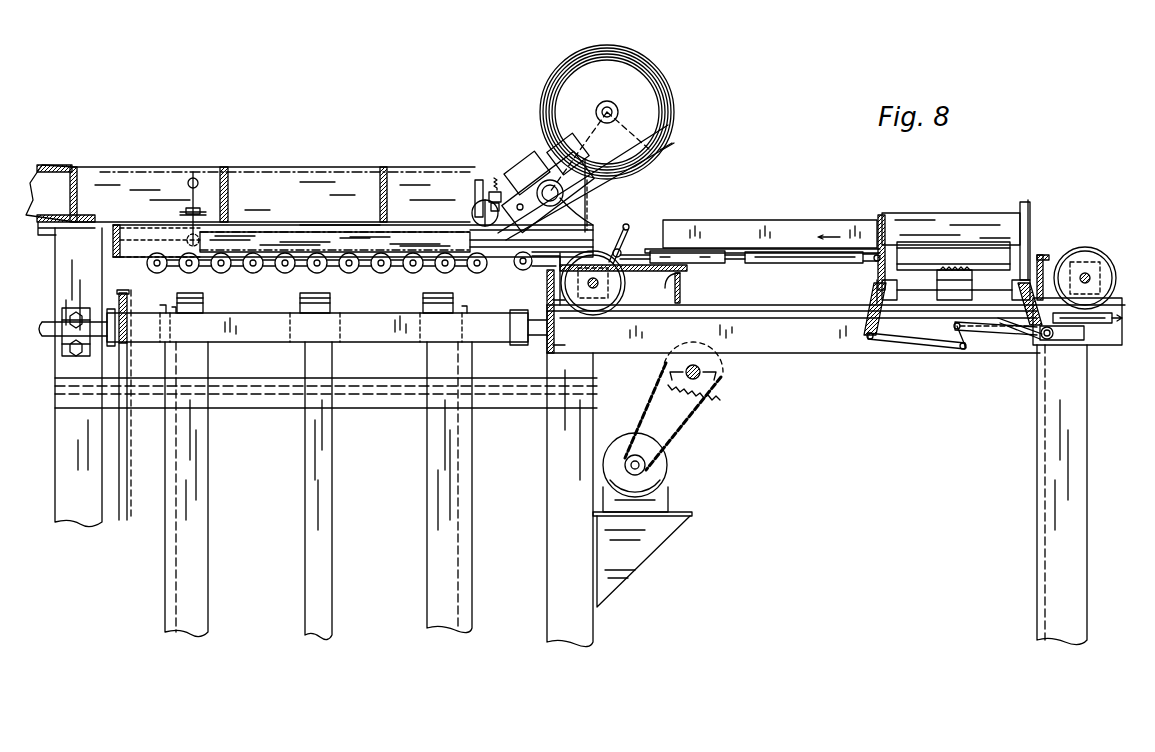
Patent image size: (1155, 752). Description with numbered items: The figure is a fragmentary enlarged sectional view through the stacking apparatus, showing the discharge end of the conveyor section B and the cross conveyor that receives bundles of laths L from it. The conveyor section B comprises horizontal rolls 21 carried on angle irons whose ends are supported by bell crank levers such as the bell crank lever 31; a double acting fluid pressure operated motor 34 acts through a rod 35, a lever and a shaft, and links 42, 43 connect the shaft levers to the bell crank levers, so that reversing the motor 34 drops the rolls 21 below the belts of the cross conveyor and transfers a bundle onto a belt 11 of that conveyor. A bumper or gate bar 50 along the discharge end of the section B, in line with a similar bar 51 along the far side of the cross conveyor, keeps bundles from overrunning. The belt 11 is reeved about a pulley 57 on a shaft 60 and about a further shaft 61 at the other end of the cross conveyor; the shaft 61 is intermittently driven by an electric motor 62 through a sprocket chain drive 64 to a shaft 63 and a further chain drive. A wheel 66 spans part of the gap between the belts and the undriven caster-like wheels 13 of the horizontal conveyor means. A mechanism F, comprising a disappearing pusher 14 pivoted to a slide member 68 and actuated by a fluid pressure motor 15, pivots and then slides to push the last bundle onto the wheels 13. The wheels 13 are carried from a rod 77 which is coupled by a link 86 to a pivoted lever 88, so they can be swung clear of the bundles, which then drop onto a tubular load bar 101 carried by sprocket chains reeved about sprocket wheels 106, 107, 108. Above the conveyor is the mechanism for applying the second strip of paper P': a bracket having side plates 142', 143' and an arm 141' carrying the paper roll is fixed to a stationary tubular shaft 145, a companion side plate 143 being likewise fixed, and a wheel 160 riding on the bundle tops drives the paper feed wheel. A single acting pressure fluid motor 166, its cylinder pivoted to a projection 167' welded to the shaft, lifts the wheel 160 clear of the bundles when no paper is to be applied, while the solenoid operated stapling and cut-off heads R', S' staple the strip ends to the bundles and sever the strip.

The link 86 is at (193, 178).
The lever 88 is at (183, 213).
The rod 77 is at (186, 240).
The strip of paper P' is at (335, 226).
The bundle of laths L is at (352, 234).
The caster-like wheels 13 is at (380, 270).
The wheel 66 is at (522, 265).
The tubular elevator or load bar 101 is at (250, 300).
The sprocket wheel 108 is at (122, 300).
The wheel 160 is at (472, 216).
The stapling head R' is at (469, 179).
The cut-off head S' is at (491, 176).
The pressure fluid motor 166 is at (555, 160).
The side plate 142' is at (548, 176).
The arm 141' is at (634, 118).
The side plate 143' is at (689, 140).
The projection 167' is at (689, 157).
The side plate 143 is at (586, 182).
The stationary tubular shaft 145 is at (590, 205).
The disappearing pusher 14 is at (624, 238).
The belt 11 is at (745, 250).
The fluid pressure motor 15 is at (782, 263).
The bar 51 is at (798, 222).
The mechanism F is at (665, 249).
The conveyor section B is at (860, 283).
The shaft 61 is at (600, 284).
The slide member 68 is at (682, 279).
The bumper or gate bar 50 is at (978, 213).
The horizontal rolls 21 is at (915, 248).
The bell crank lever 31 is at (866, 335).
The link 43 is at (895, 337).
The link 42 is at (970, 340).
The rod 35 is at (993, 338).
The shaft 60 is at (1090, 276).
The pulley 57 is at (1086, 272).
The fluid pressure operated motor 34 is at (1105, 326).
The sprocket wheel 107 is at (1050, 340).
The sprocket wheel 106 is at (1090, 348).
The shaft 63 is at (712, 372).
The sprocket chain drive 64 is at (698, 416).
The electric motor 62 is at (663, 466).